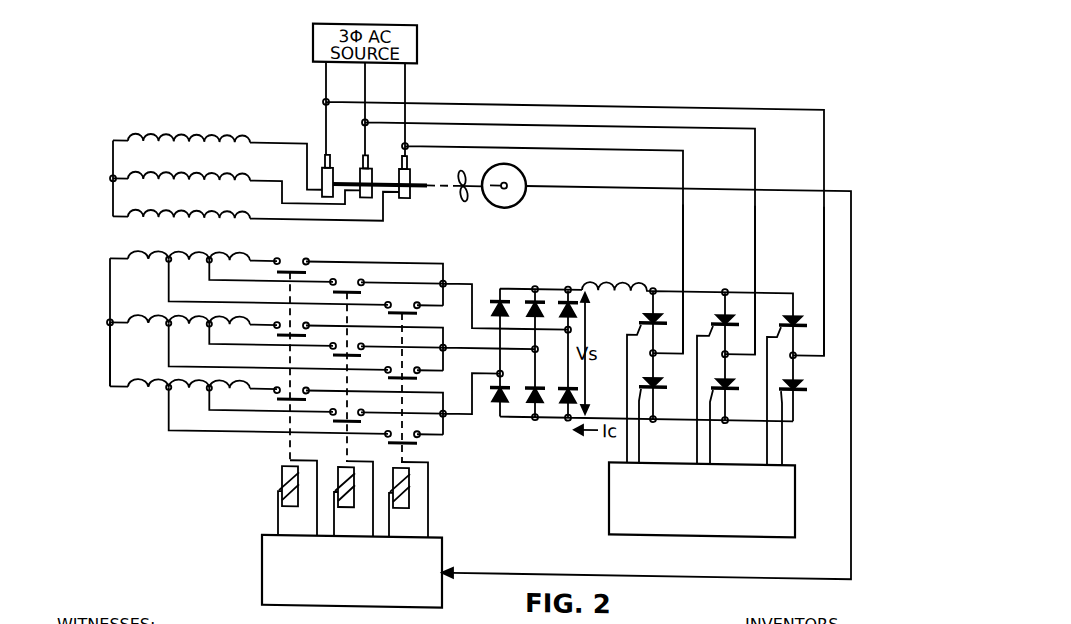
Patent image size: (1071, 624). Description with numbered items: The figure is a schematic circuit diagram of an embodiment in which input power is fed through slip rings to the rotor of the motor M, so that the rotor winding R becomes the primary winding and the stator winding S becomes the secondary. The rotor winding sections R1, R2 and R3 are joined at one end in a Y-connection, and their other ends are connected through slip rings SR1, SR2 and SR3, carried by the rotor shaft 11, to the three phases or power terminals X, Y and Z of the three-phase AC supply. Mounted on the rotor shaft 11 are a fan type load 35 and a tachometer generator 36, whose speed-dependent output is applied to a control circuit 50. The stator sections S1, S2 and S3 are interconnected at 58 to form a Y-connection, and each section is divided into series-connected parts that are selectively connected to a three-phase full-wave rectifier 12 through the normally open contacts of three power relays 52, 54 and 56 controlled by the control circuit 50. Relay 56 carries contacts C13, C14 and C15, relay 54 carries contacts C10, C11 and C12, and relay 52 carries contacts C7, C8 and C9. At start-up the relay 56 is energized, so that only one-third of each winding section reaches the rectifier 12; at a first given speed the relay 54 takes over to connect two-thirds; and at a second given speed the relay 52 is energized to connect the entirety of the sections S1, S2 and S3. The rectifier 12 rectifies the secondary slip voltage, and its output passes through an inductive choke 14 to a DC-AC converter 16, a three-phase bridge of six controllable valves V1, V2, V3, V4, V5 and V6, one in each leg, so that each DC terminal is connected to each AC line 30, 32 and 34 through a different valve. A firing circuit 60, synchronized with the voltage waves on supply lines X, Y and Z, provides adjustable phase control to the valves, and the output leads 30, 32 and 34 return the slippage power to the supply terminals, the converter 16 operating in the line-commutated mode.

The power terminal X is at (327, 86).
The power terminal Y is at (367, 86).
The power terminal Z is at (406, 83).
The rotor winding R is at (91, 221).
The rotor winding section R1 is at (175, 143).
The rotor winding section R2 is at (169, 181).
The rotor winding section R3 is at (167, 218).
The slip ring SR1 is at (343, 147).
The slip ring SR2 is at (381, 153).
The slip ring SR3 is at (407, 161).
The rotor shaft 11 is at (413, 191).
The fan type load 35 is at (466, 178).
The tachometer generator 36 is at (526, 176).
The AC line 30 is at (683, 218).
The AC line 32 is at (755, 218).
The AC line 34 is at (824, 218).
The stator winding S is at (52, 361).
The motor M is at (192, 247).
The interconnection point 58 is at (110, 367).
The stator winding section S1 is at (166, 258).
The stator winding section S2 is at (166, 322).
The stator winding section S3 is at (166, 386).
The normally open contact C7 is at (277, 274).
The normally open contact C8 is at (277, 337).
The normally open contact C9 is at (277, 401).
The normally open contact C10 is at (341, 293).
The normally open contact C11 is at (341, 356).
The normally open contact C12 is at (341, 422).
The normally open contact C13 is at (412, 314).
The normally open contact C14 is at (412, 379).
The normally open contact C15 is at (412, 444).
The power relay 52 is at (281, 481).
The power relay 54 is at (350, 470).
The power relay 56 is at (412, 486).
The control circuit 50 is at (444, 551).
The three-phase full-wave rectifier 12 is at (550, 283).
The inductive choke 14 is at (608, 279).
The DC-AC converter 16 is at (793, 283).
The controllable electric valve V1 is at (657, 317).
The controllable electric valve V2 is at (800, 378).
The controllable electric valve V3 is at (716, 317).
The controllable electric valve V4 is at (660, 377).
The controllable electric valve V5 is at (784, 317).
The controllable electric valve V6 is at (731, 377).
The firing circuit 60 is at (609, 492).